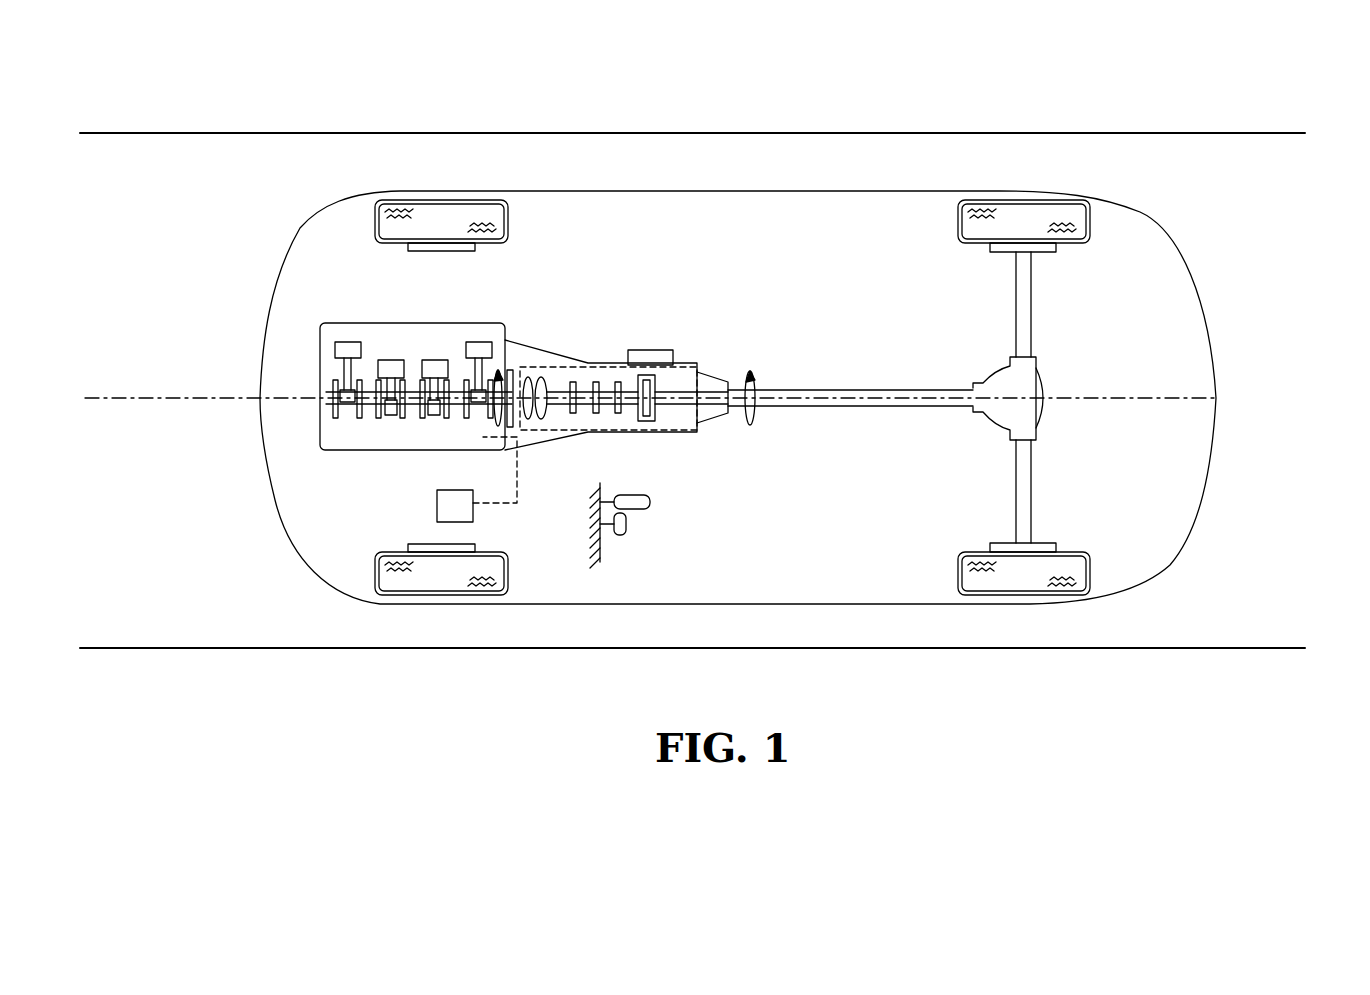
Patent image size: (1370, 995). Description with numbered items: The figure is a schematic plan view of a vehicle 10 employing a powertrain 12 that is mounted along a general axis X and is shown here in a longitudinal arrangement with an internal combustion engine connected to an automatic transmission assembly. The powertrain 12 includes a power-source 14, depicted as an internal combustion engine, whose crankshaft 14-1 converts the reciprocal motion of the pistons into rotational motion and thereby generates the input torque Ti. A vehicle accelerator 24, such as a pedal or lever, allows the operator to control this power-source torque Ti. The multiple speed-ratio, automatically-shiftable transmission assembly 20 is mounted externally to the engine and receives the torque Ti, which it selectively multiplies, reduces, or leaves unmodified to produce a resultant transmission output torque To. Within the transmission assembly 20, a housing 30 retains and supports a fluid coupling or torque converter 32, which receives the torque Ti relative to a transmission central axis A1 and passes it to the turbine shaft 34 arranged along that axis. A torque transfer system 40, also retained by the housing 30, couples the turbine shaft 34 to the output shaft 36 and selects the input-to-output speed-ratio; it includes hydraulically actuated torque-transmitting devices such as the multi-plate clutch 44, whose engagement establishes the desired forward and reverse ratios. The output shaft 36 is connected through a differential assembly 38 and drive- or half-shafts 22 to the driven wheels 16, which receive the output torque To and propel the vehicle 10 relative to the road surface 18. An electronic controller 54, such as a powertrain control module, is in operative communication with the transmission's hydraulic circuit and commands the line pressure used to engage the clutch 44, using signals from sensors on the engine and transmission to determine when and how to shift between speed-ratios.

The vehicle 10 is at (738, 343).
The powertrain 12 is at (358, 468).
The power-source 14 is at (379, 364).
The crankshaft 14-1 is at (365, 415).
The driven wheels 16 is at (1040, 214).
The road surface 18 is at (186, 613).
The automatic transmission assembly 20 is at (647, 364).
The drive-shaft 22 is at (850, 408).
The vehicle accelerator 24 is at (650, 502).
The transmission housing 30 is at (570, 433).
The fluid coupling 32 is at (556, 352).
The turbine shaft 34 is at (538, 425).
The output shaft 36 is at (668, 430).
The differential assembly 38 is at (1038, 363).
The torque transfer system 40 is at (672, 378).
The torque-transmitting device 44 is at (675, 351).
The electronic controller 54 is at (468, 515).
The transmission central axis A1 is at (499, 365).
The general axis X is at (170, 398).
The power-source torque Ti is at (495, 420).
The transmission output torque To is at (752, 423).